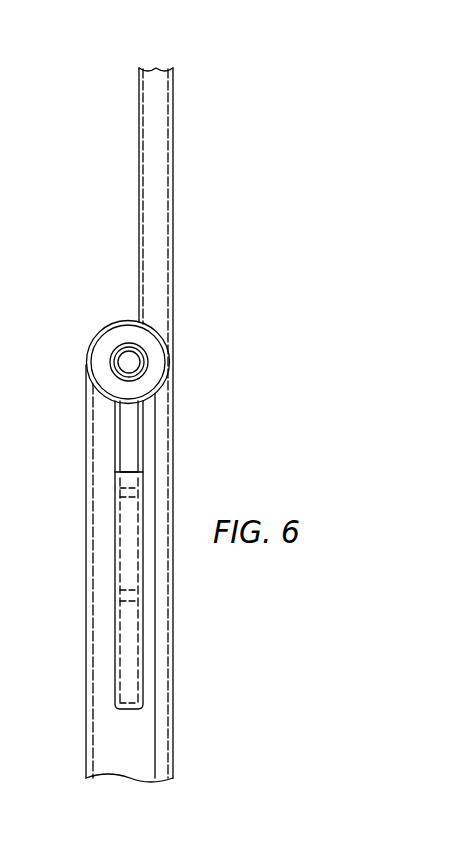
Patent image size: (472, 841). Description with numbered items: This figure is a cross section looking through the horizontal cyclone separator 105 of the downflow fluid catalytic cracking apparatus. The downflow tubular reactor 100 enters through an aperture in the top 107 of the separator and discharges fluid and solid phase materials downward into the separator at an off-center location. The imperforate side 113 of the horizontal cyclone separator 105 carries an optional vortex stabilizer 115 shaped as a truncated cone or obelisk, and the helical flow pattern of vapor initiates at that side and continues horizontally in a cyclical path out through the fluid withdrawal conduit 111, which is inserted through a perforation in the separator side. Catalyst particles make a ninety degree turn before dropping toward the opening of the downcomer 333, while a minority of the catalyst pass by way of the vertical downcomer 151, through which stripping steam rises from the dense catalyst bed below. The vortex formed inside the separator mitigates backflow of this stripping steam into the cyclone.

The downflow tubular reactor 100 is at (176, 172).
The horizontal cyclone separator 105 is at (77, 231).
The top 107 is at (99, 332).
The fluid withdrawal conduit 111 is at (148, 371).
The imperforate side 113 is at (98, 363).
The vortex stabilizer 115 is at (132, 362).
The vertical downcomer 151 is at (175, 722).
The downcomer 333 is at (130, 440).